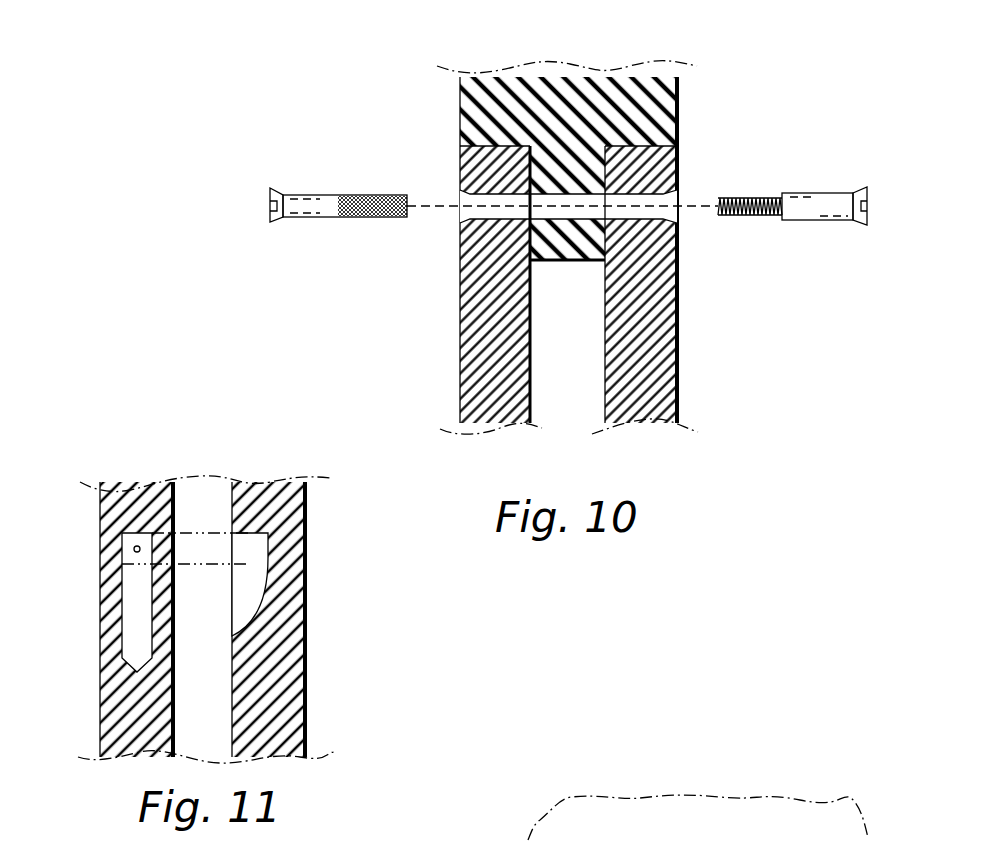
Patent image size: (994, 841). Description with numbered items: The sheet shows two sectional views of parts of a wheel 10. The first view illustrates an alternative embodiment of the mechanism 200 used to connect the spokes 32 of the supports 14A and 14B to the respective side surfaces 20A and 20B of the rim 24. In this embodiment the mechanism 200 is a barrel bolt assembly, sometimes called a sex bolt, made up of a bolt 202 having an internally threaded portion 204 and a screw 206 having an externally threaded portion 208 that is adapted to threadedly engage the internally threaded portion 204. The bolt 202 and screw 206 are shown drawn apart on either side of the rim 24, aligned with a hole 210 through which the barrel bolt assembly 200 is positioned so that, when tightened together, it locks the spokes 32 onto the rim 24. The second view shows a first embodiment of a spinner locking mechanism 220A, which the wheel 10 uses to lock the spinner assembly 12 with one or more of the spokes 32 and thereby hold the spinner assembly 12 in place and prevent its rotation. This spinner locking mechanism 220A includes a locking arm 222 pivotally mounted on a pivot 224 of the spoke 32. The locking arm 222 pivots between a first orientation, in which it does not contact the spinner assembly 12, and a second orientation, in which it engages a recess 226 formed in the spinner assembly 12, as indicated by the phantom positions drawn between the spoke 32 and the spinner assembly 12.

In FIG. 10, the wheel 10 is at (836, 756).
In FIG. 11, the wheel 10 is at (92, 436).
In FIG. 11, the spinner assembly 12 is at (292, 695).
In FIG. 10, the first support 14A is at (493, 410).
In FIG. 10, the second support 14B is at (640, 410).
In FIG. 10, the first side surface of the rim 20A is at (463, 112).
In FIG. 10, the second side surface of the rim 20B is at (668, 98).
In FIG. 10, the rim 24 is at (584, 76).
In FIG. 10, the spoke 32 is at (463, 366).
In FIG. 11, the spoke 32 is at (112, 713).
In FIG. 10, the mechanism 200 is at (800, 189).
In FIG. 10, the bolt 202 is at (292, 208).
In FIG. 10, the internally threaded portion 204 is at (380, 218).
In FIG. 10, the screw 206 is at (829, 221).
In FIG. 10, the externally threaded portion 208 is at (736, 218).
In FIG. 10, the hole 210 is at (680, 194).
In FIG. 11, the spinner locking mechanism 220A is at (328, 556).
In FIG. 11, the locking arm 222 is at (136, 637).
In FIG. 11, the pivot 224 is at (137, 545).
In FIG. 11, the recess 226 is at (252, 561).